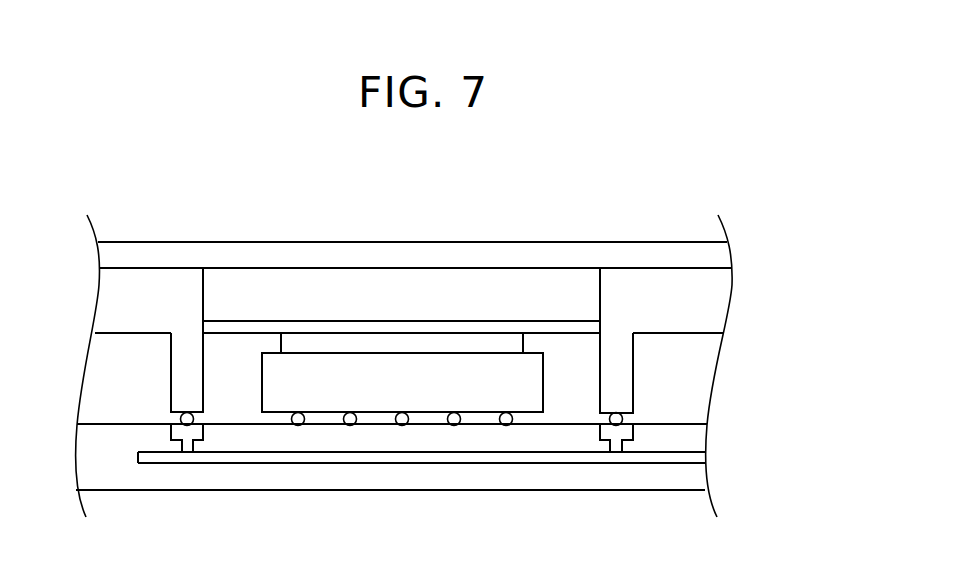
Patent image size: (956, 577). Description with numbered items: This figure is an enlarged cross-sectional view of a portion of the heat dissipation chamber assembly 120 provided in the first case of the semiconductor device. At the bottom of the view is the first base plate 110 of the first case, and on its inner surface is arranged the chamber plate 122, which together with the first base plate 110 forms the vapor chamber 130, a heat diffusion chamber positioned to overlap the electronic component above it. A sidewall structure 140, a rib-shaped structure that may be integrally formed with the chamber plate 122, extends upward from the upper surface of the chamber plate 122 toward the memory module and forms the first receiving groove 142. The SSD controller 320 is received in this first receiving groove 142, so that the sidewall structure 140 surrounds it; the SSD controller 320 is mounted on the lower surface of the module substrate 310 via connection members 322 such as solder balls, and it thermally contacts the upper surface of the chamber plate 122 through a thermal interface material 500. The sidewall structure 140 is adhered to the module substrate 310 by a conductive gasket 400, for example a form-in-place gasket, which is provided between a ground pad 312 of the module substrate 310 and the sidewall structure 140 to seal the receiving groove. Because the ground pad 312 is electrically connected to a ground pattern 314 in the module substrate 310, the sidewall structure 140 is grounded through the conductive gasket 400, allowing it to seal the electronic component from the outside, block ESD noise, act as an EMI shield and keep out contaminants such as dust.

The first base plate 110 is at (410, 253).
The heat dissipation chamber assembly 120 is at (338, 256).
The chamber plate 122 is at (561, 327).
The vapor chamber 130 is at (491, 291).
The sidewall structure 140 is at (623, 376).
The first receiving groove 142 is at (233, 404).
The conductive gasket 400 is at (622, 421).
The module substrate 310 is at (113, 479).
The ground pad 312 is at (627, 437).
The ground pattern 314 is at (657, 458).
The SSD controller 320 is at (376, 396).
The connection members 322 is at (298, 426).
The thermal interface material 500 is at (478, 346).